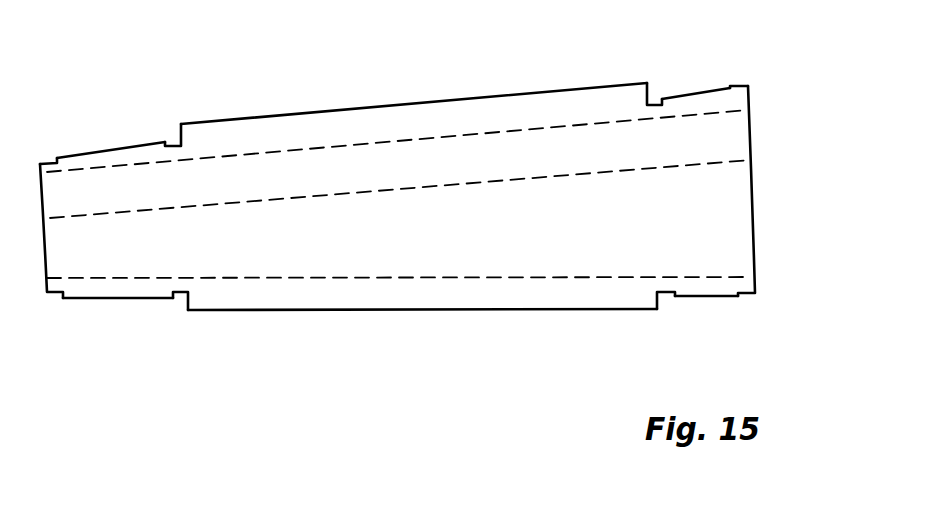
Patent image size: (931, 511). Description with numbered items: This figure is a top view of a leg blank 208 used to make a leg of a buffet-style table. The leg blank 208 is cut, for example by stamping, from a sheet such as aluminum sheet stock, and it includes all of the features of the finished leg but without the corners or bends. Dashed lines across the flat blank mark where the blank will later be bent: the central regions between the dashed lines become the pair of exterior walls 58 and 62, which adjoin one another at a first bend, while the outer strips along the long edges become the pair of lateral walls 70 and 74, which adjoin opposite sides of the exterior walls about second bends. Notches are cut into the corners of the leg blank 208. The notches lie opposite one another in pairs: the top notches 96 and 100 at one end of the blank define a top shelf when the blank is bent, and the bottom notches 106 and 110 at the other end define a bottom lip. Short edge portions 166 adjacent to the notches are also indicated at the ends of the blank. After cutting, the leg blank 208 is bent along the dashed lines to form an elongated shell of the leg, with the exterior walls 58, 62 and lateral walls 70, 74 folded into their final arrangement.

The exterior wall 58 is at (718, 137).
The exterior wall 62 is at (718, 215).
The lateral wall 70 is at (383, 122).
The lateral wall 74 is at (372, 292).
The top notch 96 is at (662, 100).
The top notch 100 is at (663, 296).
The bottom notch 106 is at (177, 143).
The bottom notch 110 is at (180, 302).
The tab edge 166 is at (92, 152).
The leg blank 208 is at (455, 352).